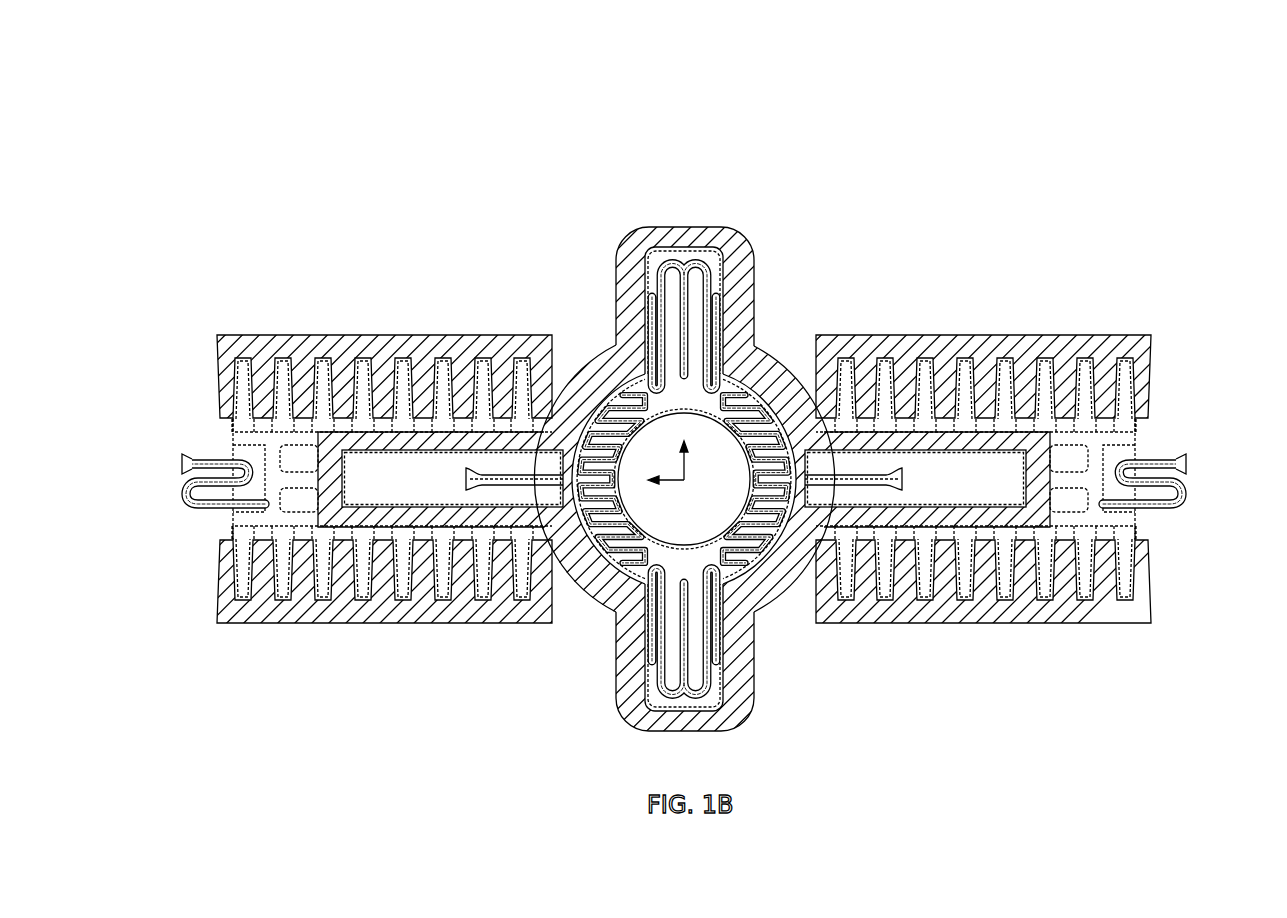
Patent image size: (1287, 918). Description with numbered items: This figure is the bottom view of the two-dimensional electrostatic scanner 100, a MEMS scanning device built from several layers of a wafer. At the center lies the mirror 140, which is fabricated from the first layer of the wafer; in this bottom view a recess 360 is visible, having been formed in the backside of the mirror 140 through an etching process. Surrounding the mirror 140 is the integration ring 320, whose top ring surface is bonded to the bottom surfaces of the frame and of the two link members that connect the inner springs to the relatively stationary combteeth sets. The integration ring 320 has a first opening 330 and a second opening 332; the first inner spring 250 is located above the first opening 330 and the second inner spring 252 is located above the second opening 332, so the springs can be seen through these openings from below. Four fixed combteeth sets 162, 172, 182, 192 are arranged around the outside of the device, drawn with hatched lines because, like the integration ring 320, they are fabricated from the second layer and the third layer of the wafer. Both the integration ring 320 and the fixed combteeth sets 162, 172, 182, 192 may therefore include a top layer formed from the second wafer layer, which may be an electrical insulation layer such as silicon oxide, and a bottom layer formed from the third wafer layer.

The two-dimensional electrostatic scanner 100 is at (304, 133).
The mirror 140 is at (725, 528).
The fixed combteeth set 162 is at (198, 382).
The fixed combteeth set 172 is at (1170, 382).
The fixed combteeth set 182 is at (1170, 585).
The fixed combteeth set 192 is at (198, 585).
The first inner spring 250 is at (521, 482).
The second inner spring 252 is at (851, 480).
The integration ring 320 is at (771, 388).
The first opening 330 is at (385, 474).
The second opening 332 is at (983, 474).
The recess 360 is at (682, 518).